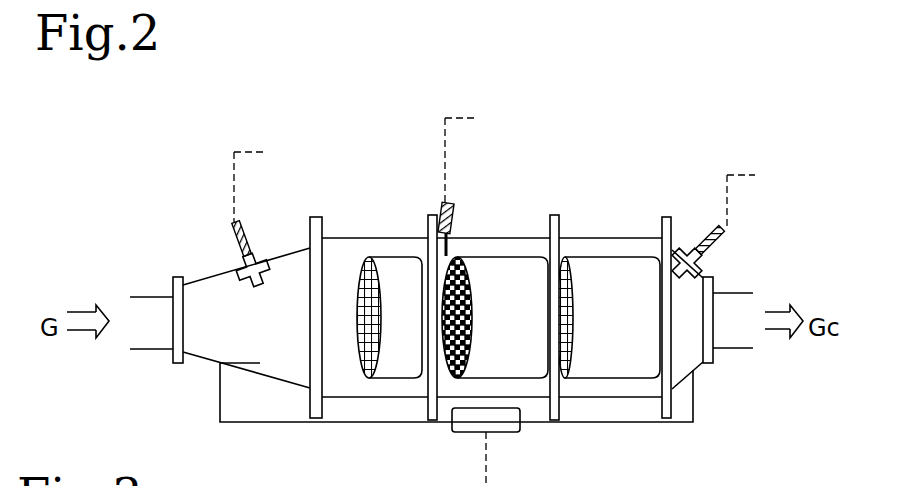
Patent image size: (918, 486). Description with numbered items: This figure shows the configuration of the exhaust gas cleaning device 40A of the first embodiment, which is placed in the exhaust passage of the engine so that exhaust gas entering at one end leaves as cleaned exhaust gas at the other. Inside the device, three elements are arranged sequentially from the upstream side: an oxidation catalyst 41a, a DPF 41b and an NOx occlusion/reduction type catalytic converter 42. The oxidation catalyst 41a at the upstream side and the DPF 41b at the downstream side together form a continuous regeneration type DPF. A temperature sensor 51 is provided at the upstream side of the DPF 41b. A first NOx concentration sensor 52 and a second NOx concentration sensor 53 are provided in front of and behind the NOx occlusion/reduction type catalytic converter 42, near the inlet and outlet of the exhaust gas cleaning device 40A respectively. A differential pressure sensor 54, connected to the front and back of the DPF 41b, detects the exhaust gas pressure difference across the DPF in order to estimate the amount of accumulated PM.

The exhaust gas cleaning device 40A is at (633, 230).
The oxidation catalyst 41a is at (387, 273).
The DPF 41b is at (512, 273).
The NOx occlusion/reduction type catalytic converter 42 is at (605, 283).
The temperature sensor 51 is at (450, 208).
The first NOx concentration sensor 52 is at (250, 237).
The second NOx concentration sensor 53 is at (724, 238).
The differential pressure sensor 54 is at (505, 432).